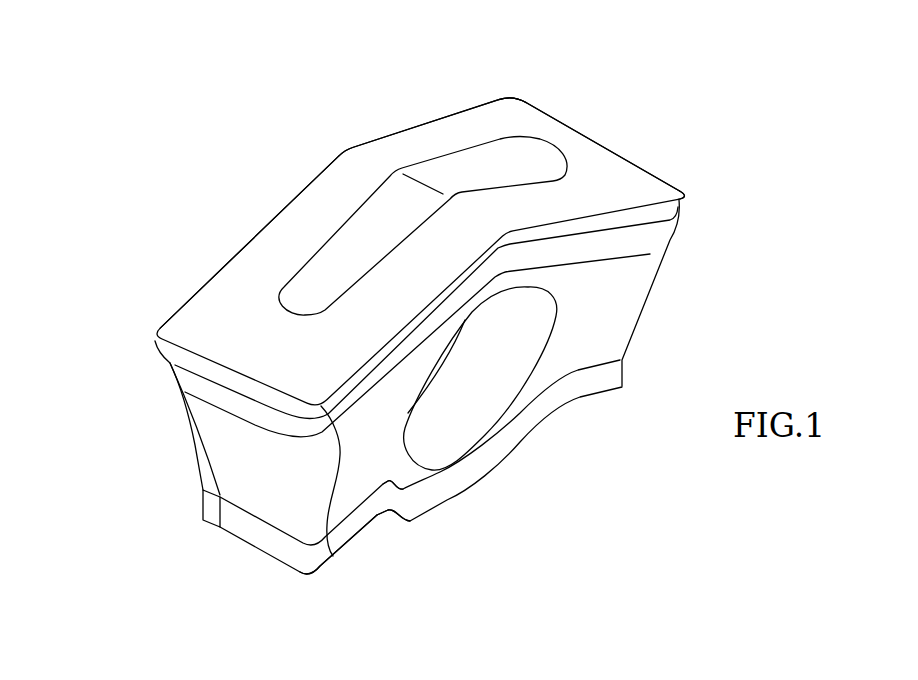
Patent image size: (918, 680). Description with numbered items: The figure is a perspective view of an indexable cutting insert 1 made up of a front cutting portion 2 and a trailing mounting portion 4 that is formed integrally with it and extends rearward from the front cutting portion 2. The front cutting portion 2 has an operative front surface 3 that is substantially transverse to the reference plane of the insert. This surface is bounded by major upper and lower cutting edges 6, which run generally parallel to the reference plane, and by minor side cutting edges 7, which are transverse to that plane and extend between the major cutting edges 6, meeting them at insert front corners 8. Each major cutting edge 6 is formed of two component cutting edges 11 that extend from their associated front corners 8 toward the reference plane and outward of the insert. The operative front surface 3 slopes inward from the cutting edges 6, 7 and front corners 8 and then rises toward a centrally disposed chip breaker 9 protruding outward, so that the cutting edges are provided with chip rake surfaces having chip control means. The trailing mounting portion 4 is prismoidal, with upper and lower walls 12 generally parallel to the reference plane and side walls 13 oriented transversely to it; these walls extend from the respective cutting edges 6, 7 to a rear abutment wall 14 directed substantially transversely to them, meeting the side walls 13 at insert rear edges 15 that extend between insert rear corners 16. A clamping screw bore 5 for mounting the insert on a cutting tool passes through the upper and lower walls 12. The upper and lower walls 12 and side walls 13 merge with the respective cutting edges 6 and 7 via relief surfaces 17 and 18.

The cutting insert 1 is at (534, 54).
The front cutting portion 2 is at (292, 105).
The operative front surface 3 is at (238, 320).
The trailing mounting portion 4 is at (517, 491).
The clamping screw bore 5 is at (497, 378).
The major cutting edges 6 is at (293, 193).
The minor side cutting edges 7 is at (568, 122).
The insert front corners 8 is at (521, 96).
The chip breaker 9 is at (375, 236).
The component cutting edges 11 is at (393, 130).
The upper and lower walls 12 is at (608, 300).
The side wall 13 is at (243, 474).
The rear abutment wall 14 is at (393, 537).
The insert rear edges 15 is at (253, 548).
The insert rear corners 16 is at (203, 513).
The relief surfaces 17 is at (600, 227).
The relief surfaces 18 is at (213, 376).